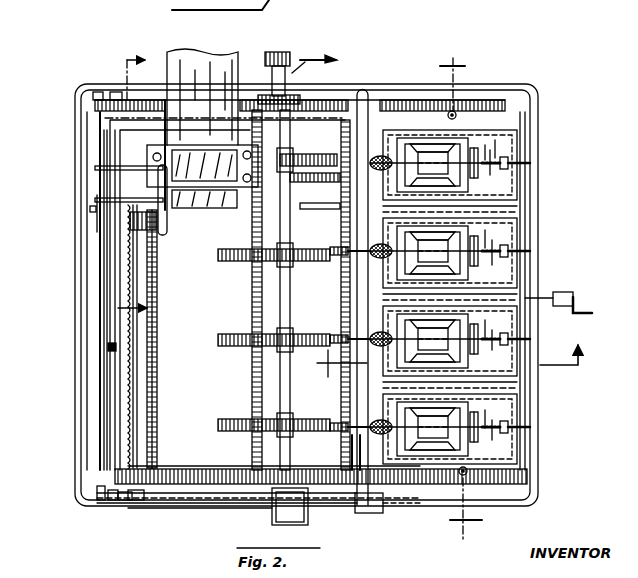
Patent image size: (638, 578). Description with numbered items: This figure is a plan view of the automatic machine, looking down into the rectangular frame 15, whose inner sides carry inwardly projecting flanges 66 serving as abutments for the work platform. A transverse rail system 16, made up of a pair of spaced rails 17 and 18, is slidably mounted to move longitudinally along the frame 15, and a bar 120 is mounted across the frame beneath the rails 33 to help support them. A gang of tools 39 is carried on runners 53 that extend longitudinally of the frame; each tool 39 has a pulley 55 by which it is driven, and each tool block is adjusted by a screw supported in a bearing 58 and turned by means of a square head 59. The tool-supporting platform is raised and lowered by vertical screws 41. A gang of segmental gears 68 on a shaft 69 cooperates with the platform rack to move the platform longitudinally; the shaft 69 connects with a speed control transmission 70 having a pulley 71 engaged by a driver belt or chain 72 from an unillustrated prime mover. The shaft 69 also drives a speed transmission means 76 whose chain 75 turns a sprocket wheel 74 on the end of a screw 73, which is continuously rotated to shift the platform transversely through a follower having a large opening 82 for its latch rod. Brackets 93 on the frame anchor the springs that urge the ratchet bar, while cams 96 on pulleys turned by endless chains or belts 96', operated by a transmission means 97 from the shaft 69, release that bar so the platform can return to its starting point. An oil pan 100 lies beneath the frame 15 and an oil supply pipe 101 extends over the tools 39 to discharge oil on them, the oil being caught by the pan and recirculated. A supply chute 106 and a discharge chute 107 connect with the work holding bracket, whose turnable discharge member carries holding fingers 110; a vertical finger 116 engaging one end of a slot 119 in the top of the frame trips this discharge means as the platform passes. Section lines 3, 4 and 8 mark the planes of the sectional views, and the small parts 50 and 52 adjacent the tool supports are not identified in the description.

The section line 3- 3 is at (461, 294).
The section line 4- 4 is at (129, 184).
The section line 8- 8 is at (452, 366).
The rectangular frame 15 is at (103, 327).
The transverse rail system 16 is at (145, 386).
The rail 17 is at (156, 418).
The rail 18 is at (253, 392).
The rails 33 is at (322, 208).
The gang of tools 39 is at (335, 180).
The vertical screws 41 is at (450, 112).
The crank block 50 is at (556, 292).
The crank handle 52 is at (574, 296).
The runners 53 is at (518, 132).
The pulley 55 is at (476, 148).
The bearing 58 is at (510, 156).
The square head 59 is at (535, 160).
The inwardly projecting flanges 66 is at (108, 347).
The segmental gears 68 is at (295, 154).
The shaft 69 is at (280, 300).
The speed control transmission 70 is at (292, 73).
The pulley 71 is at (274, 54).
The driver belt or chain 72 is at (336, 58).
The screw 73 is at (128, 420).
The sprocket wheel 74 is at (125, 502).
The chain 75 is at (232, 500).
The speed transmission means 76 is at (306, 516).
The large opening 82 is at (352, 447).
The brackets 93 is at (92, 95).
The cams 96 is at (100, 294).
The endless chains or belts 96' is at (146, 509).
The transmission means 97 is at (268, 95).
The oil pan 100 is at (84, 295).
The oil supply pipe 101 is at (362, 93).
The supply chute 106 is at (147, 150).
The discharge chute 107 is at (205, 52).
The holding fingers 110 is at (100, 173).
The vertical finger 116 is at (90, 209).
The slot 119 is at (100, 225).
The bar 120 is at (345, 300).